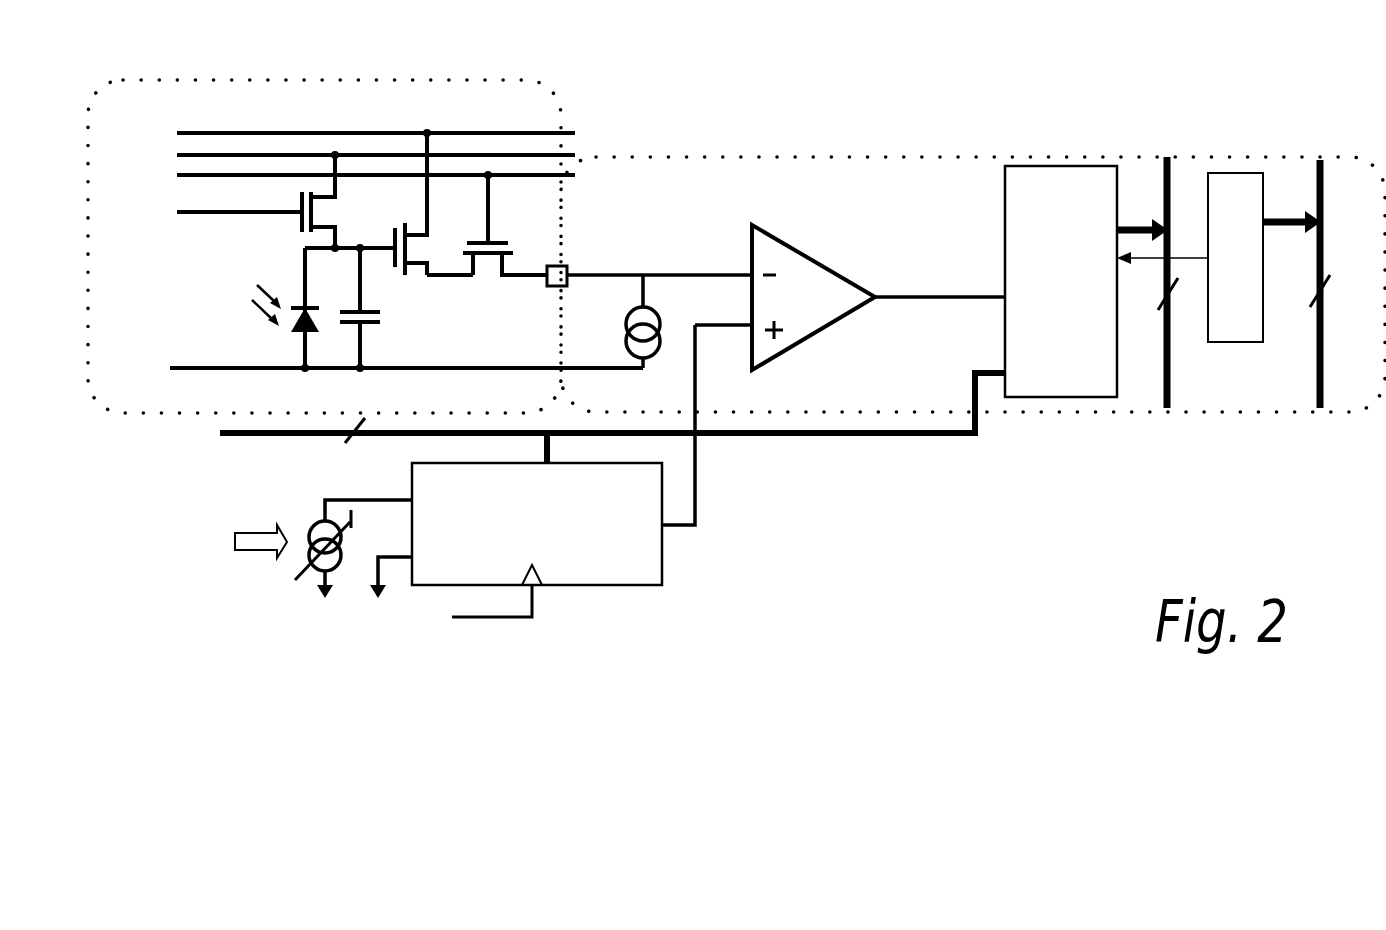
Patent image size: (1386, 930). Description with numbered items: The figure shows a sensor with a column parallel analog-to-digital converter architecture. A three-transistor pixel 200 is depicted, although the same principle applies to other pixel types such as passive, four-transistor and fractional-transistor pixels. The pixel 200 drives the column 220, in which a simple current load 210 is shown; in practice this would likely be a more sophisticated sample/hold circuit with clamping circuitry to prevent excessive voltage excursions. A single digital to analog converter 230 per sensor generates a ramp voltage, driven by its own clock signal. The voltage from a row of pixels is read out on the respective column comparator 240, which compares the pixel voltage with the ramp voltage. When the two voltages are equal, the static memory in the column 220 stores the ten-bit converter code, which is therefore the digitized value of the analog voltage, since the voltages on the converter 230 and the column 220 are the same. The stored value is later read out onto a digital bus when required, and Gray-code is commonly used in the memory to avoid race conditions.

The pixel 200 is at (420, 223).
The column 220 is at (973, 271).
The current load 210 is at (626, 321).
The column comparator 240 is at (785, 297).
The digital to analog converter (DAC) 230 is at (575, 471).